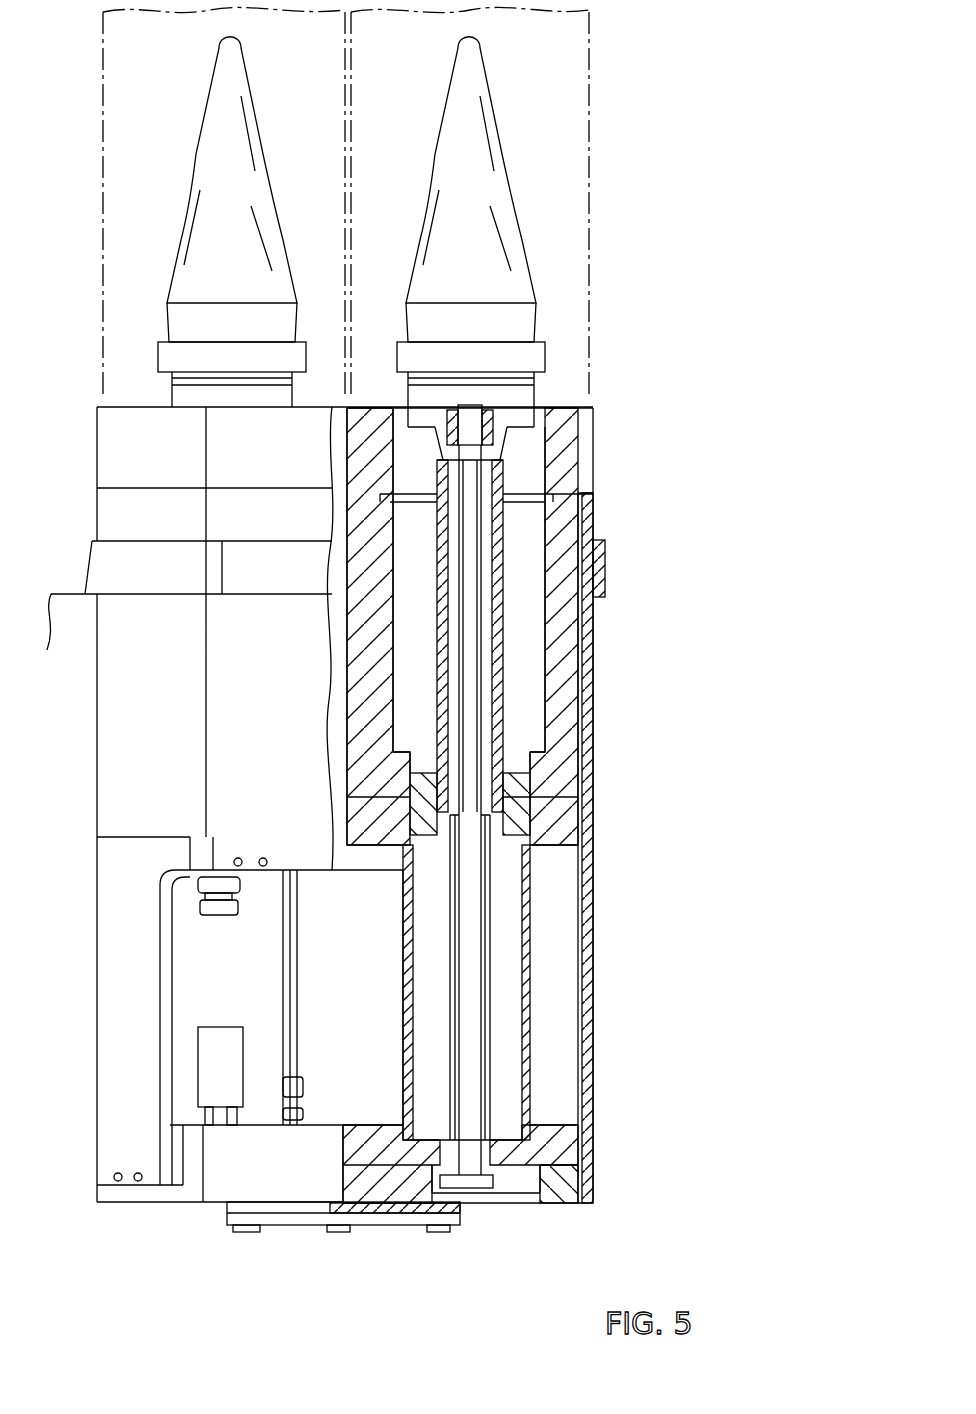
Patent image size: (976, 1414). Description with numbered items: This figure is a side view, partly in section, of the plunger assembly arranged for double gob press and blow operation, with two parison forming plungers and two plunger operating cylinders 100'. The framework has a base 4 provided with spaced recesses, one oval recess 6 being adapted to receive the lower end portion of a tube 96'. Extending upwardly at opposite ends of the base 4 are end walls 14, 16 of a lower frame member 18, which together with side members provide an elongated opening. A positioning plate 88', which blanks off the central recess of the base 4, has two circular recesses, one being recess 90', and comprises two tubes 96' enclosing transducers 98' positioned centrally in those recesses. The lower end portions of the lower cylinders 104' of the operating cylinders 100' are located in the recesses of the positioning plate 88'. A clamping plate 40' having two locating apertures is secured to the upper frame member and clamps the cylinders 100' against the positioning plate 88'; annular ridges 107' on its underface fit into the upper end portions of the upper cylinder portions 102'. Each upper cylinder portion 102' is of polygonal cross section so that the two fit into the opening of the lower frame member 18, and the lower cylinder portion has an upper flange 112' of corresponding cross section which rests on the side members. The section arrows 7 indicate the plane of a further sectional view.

The base 4 is at (555, 1190).
The recess 6 is at (508, 1188).
The section line 7 is at (605, 995).
The end wall 14 is at (592, 925).
The end wall 16 is at (113, 1083).
The lower frame member 18 is at (137, 928).
The clamping plate 40' is at (526, 795).
The positioning plate 88' is at (519, 1164).
The recess 90' is at (394, 1232).
The tube 96' is at (570, 977).
The transducer 98' is at (574, 810).
The plunger operating cylinder 100' is at (618, 626).
The upper cylinder portion 102' is at (639, 848).
The lower cylinder 104' is at (562, 992).
The annular ridge 107' is at (543, 480).
The upper flange 112' is at (555, 804).